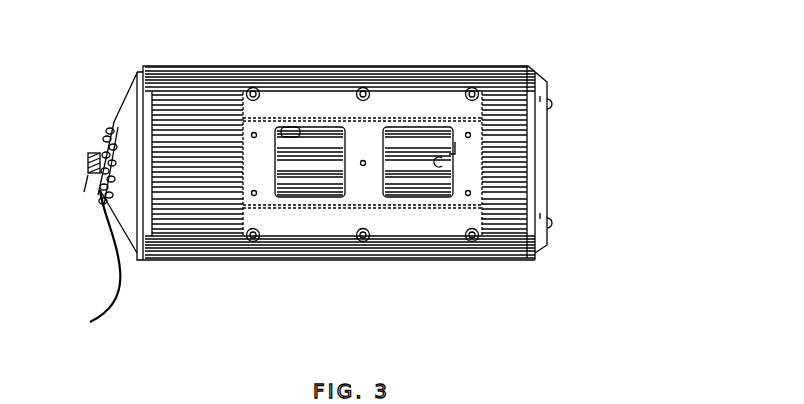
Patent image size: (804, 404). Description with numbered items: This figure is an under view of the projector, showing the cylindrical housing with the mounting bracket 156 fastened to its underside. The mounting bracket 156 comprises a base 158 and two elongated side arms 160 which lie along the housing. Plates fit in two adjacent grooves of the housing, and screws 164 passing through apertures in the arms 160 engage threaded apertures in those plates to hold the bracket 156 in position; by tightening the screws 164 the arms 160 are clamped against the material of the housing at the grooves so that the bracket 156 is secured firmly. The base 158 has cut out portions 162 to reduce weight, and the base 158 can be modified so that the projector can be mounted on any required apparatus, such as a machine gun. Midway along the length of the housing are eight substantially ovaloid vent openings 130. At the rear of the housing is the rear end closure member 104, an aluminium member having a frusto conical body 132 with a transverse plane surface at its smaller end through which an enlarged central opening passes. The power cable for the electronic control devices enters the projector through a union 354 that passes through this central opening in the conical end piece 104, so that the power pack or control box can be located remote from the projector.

The rear end closure member 104 is at (127, 117).
The vent openings 130 is at (290, 128).
The frusto conical body 132 is at (85, 265).
The mounting bracket 156 is at (403, 101).
The base 158 is at (472, 177).
The side arms 160 is at (308, 105).
The cut out portions 162 is at (455, 147).
The screws 164 is at (255, 242).
The union 354 is at (97, 165).